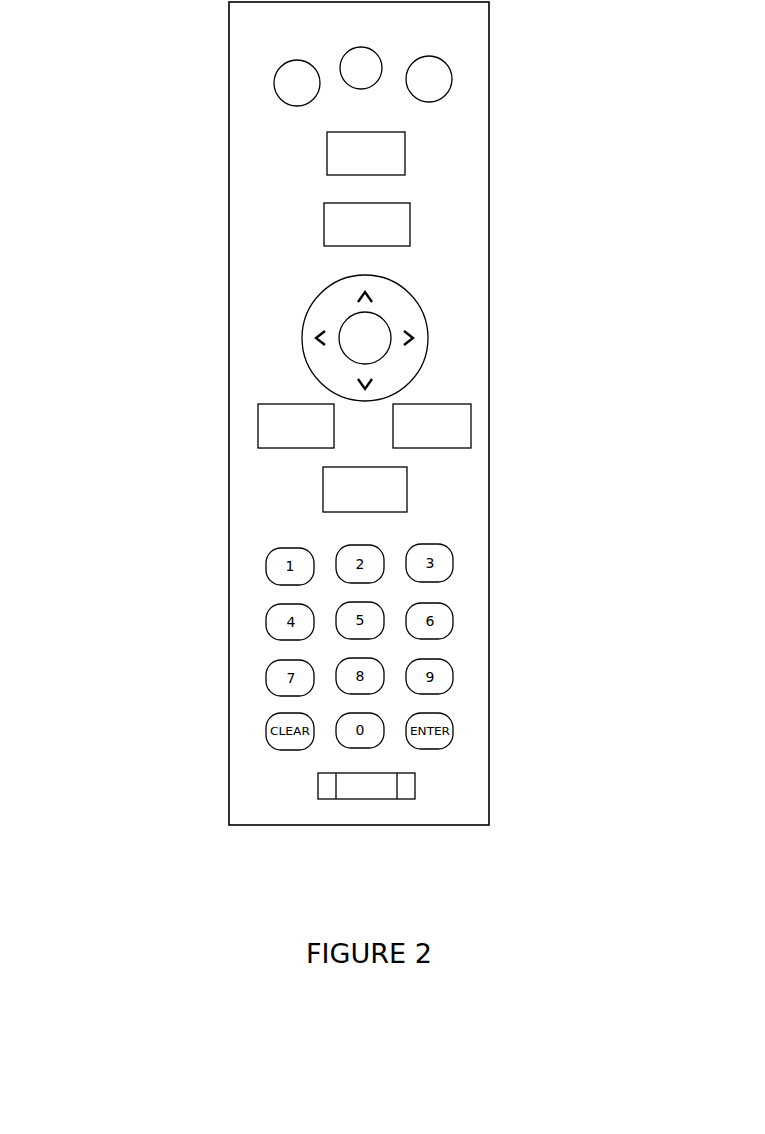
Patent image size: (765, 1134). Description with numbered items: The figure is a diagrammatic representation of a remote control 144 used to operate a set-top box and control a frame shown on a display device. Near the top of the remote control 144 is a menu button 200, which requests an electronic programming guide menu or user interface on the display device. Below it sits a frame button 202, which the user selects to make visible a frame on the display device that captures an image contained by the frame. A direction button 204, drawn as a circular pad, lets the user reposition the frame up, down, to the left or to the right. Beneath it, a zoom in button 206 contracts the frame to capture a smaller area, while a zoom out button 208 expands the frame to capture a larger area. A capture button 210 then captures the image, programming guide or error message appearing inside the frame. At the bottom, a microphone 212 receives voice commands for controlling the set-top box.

The remote control 144 is at (359, 413).
The menu button 200 is at (405, 152).
The frame button 202 is at (410, 223).
The direction button 204 is at (412, 292).
The zoom in button 206 is at (471, 427).
The zoom out button 208 is at (258, 427).
The capture button 210 is at (407, 504).
The microphone 212 is at (415, 785).